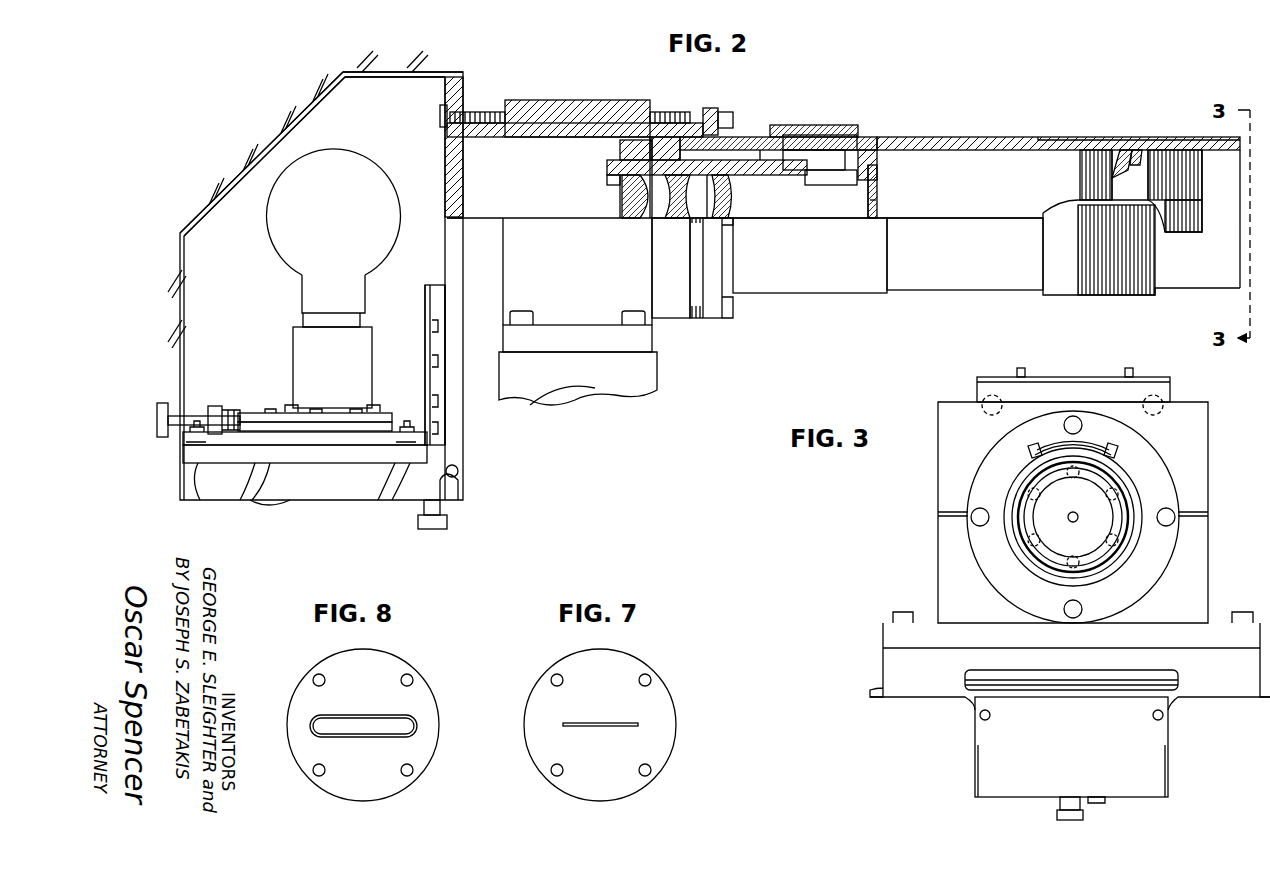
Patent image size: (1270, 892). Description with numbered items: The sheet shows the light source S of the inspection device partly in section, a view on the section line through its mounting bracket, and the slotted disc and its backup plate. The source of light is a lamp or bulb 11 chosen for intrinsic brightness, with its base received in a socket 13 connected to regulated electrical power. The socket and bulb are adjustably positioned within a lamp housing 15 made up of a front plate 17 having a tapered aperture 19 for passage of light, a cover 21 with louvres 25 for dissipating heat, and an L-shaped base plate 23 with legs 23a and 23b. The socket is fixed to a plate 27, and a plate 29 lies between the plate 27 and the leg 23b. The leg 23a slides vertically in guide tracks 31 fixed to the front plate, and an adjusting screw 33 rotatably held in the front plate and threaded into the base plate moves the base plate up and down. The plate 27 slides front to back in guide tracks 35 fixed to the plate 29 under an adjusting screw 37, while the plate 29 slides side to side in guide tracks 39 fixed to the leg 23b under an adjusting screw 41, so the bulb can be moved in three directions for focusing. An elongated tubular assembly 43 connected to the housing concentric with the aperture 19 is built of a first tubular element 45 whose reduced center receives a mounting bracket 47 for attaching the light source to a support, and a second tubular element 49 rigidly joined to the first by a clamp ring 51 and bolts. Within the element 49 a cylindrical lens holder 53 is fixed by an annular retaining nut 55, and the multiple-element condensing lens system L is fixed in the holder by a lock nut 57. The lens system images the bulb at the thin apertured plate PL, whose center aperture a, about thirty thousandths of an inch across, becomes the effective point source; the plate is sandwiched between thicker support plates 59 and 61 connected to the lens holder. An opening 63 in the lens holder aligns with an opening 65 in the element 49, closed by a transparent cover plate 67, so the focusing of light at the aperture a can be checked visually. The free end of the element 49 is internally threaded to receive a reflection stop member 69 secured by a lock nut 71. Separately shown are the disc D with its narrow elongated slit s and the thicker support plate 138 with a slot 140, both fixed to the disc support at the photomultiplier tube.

In FIG. 2, the lamp or bulb 11 is at (372, 172).
In FIG. 2, the socket 13 is at (292, 349).
In FIG. 2, the lamp housing 15 is at (323, 86).
In FIG. 2, the front plate 17 is at (463, 430).
In FIG. 2, the aperture 19 is at (458, 205).
In FIG. 2, the cover 21 is at (181, 224).
In FIG. 2, the L-shaped base plate 23 is at (380, 440).
In FIG. 2, the leg of base plate 23a is at (425, 313).
In FIG. 2, the leg of base plate 23b is at (320, 455).
In FIG. 2, the louvres 25 is at (236, 183).
In FIG. 2, the plate 27 is at (258, 412).
In FIG. 2, the plate 29 is at (245, 470).
In FIG. 2, the guide tracks 31 is at (447, 401).
In FIG. 2, the adjusting screw 33 is at (448, 522).
In FIG. 3, the adjusting screw 33 is at (1084, 816).
In FIG. 2, the guide tracks 35 is at (378, 422).
In FIG. 2, the adjusting screw 37 is at (156, 418).
In FIG. 2, the guide tracks 39 is at (197, 445).
In FIG. 2, the adjusting screw 41 is at (278, 502).
In FIG. 2, the elongated tubular assembly 43 is at (925, 135).
In FIG. 2, the first tubular element 45 is at (482, 110).
In FIG. 2, the mounting bracket 47 is at (542, 100).
In FIG. 3, the mounting bracket 47 is at (1208, 457).
In FIG. 2, the second elongated tubular element 49 is at (992, 137).
In FIG. 2, the clamp ring 51 is at (712, 108).
In FIG. 3, the clamp ring 51 is at (1008, 600).
In FIG. 2, the lens holder 53 is at (788, 170).
In FIG. 2, the annular retaining nut 55 is at (619, 150).
In FIG. 2, the lock nut 57 is at (606, 181).
In FIG. 2, the support plate 59 is at (878, 186).
In FIG. 3, the support plate 59 is at (1095, 492).
In FIG. 2, the support plate 61 is at (863, 182).
In FIG. 2, the opening 63 is at (816, 185).
In FIG. 2, the opening 65 is at (832, 150).
In FIG. 2, the transparent cover plate 67 is at (815, 125).
In FIG. 3, the transparent cover plate 67 is at (1098, 441).
In FIG. 2, the reflection stop member 69 is at (1128, 150).
In FIG. 2, the lock nut 71 is at (1140, 150).
In FIG. 2, the condensing lens system L is at (642, 222).
In FIG. 2, the apertured plate PL is at (878, 206).
In FIG. 2, the center aperture a is at (872, 218).
In FIG. 3, the center aperture a is at (1075, 520).
In FIG. 2, the light source S is at (516, 420).
In FIG. 8, the support plate 138 is at (437, 697).
In FIG. 8, the slot 140 is at (346, 725).
In FIG. 7, the disc D is at (675, 705).
In FIG. 7, the slit s is at (609, 722).